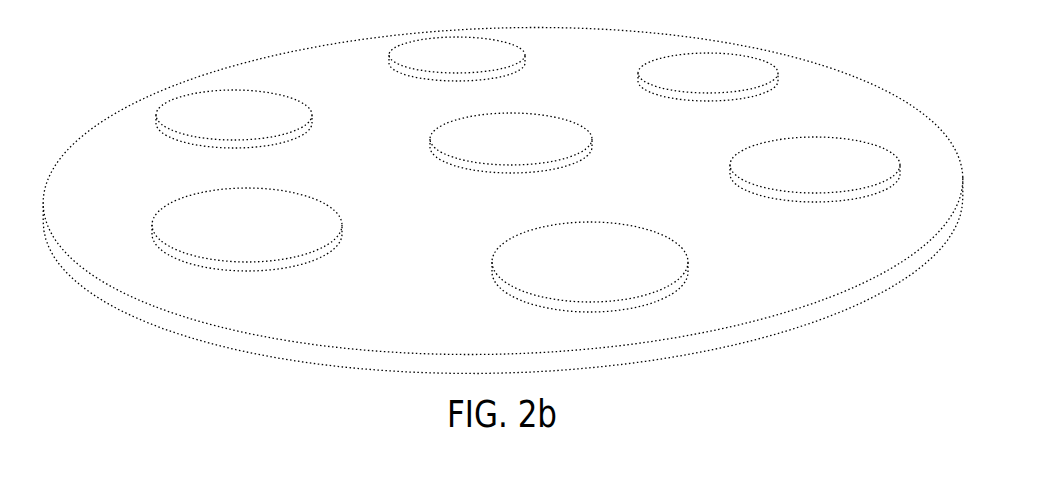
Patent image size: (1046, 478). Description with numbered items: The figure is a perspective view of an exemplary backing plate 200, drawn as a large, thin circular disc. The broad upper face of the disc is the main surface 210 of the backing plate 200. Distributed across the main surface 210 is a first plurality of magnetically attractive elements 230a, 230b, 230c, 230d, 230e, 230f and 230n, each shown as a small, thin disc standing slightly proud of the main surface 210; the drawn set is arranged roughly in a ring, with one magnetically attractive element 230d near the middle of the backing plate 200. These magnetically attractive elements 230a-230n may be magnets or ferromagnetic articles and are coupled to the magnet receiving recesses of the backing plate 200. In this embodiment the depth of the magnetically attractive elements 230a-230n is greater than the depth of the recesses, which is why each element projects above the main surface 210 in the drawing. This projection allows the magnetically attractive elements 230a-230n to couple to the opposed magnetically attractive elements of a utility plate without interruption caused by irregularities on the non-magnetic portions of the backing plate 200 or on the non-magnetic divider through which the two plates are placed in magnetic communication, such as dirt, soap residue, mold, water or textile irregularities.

The backing plate 200 is at (502, 193).
The main surface 210 is at (502, 193).
The magnetically attractive element 230a is at (457, 59).
The magnetically attractive element 230b is at (708, 77).
The magnetically attractive element 230c is at (234, 119).
The magnetically attractive element 230d is at (511, 143).
The magnetically attractive element 230e is at (815, 169).
The magnetically attractive element 230f is at (247, 229).
The magnetically attractive element 230n is at (590, 267).